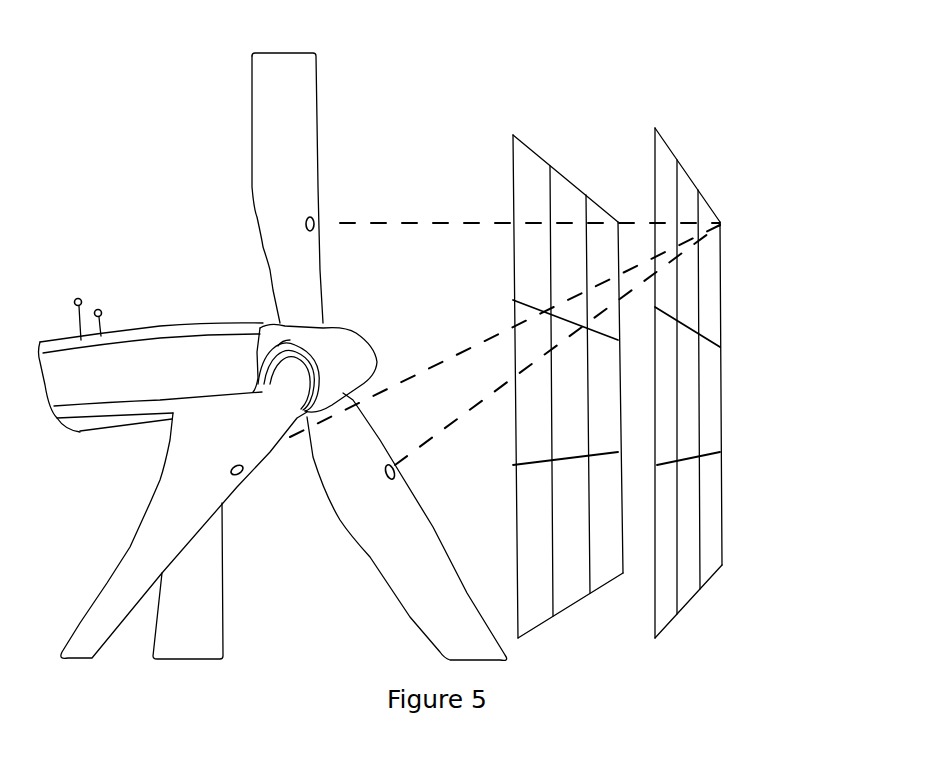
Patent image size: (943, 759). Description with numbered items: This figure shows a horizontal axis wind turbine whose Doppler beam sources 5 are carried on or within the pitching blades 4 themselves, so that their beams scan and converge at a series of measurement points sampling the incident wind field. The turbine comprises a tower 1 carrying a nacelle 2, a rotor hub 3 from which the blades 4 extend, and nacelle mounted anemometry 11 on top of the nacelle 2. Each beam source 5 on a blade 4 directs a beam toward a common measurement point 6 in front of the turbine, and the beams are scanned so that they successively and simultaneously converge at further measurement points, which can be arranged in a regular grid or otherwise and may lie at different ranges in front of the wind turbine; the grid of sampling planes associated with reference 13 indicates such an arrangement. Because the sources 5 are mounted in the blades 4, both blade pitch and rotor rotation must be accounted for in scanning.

The tower 1 is at (197, 607).
The nacelle 2 is at (148, 375).
The rotor hub 3 is at (347, 343).
The blades 4 is at (265, 122).
The Doppler beam sources 5 is at (305, 221).
The measurement point 6 is at (720, 222).
The nacelle mounted anemometry 11 is at (74, 290).
The detection zone boundary lines 13 is at (513, 465).